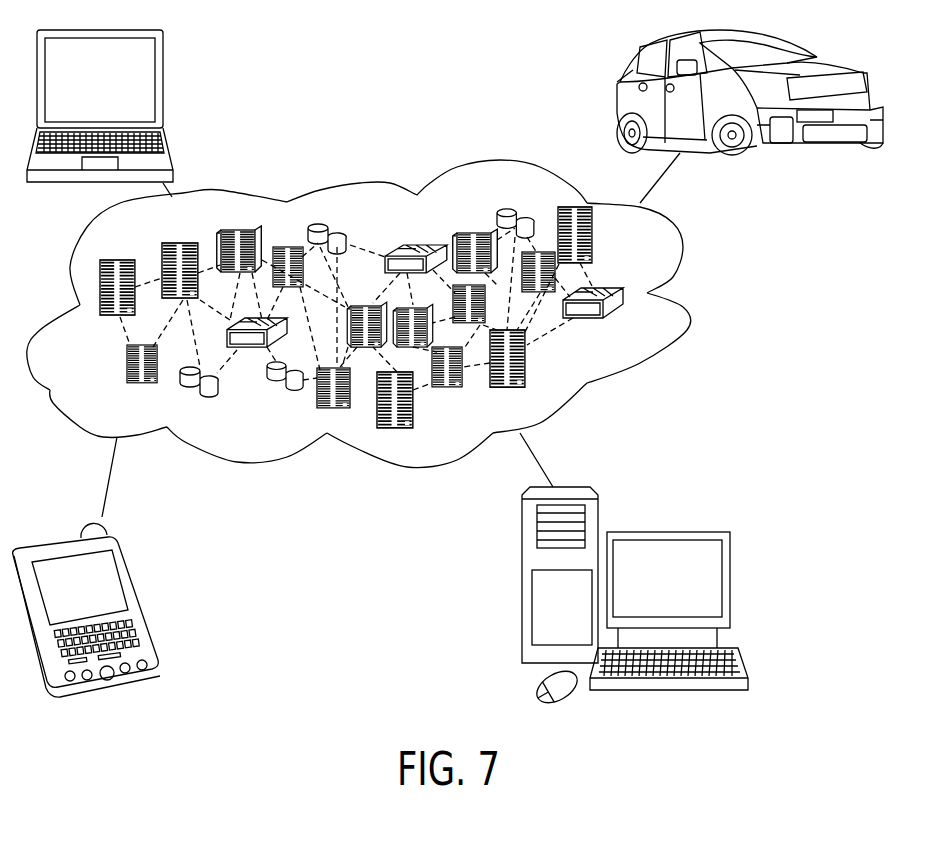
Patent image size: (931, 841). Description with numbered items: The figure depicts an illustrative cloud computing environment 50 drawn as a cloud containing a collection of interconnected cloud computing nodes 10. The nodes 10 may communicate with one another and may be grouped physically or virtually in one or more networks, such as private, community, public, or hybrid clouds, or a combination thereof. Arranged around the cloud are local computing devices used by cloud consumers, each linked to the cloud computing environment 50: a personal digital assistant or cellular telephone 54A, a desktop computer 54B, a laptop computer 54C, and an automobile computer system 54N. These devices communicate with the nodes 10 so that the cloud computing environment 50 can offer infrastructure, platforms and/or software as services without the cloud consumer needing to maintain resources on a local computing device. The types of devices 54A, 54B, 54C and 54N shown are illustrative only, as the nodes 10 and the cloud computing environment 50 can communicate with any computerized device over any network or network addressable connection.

The cloud computing nodes 10 is at (640, 343).
The cloud computing environment 50 is at (685, 243).
The personal digital assistant (PDA) or cellular telephone 54A is at (132, 580).
The desktop computer 54B is at (730, 578).
The laptop computer 54C is at (163, 83).
The automobile computer system 54N is at (800, 50).